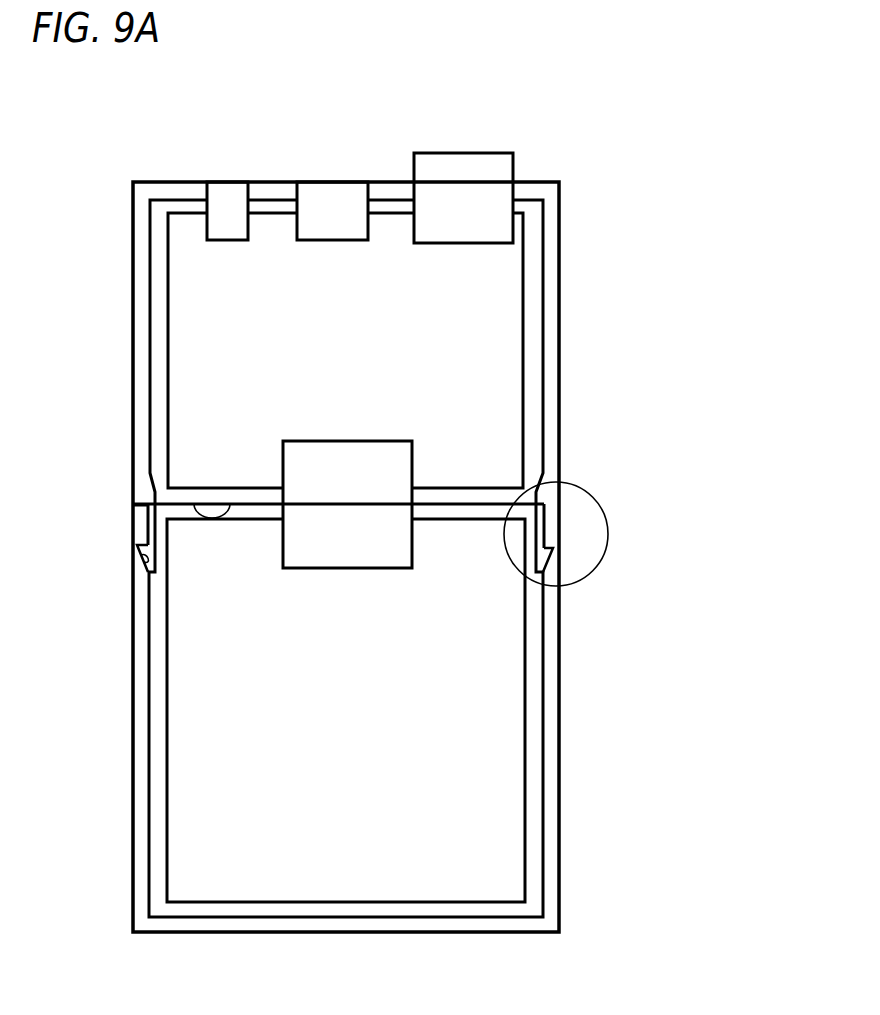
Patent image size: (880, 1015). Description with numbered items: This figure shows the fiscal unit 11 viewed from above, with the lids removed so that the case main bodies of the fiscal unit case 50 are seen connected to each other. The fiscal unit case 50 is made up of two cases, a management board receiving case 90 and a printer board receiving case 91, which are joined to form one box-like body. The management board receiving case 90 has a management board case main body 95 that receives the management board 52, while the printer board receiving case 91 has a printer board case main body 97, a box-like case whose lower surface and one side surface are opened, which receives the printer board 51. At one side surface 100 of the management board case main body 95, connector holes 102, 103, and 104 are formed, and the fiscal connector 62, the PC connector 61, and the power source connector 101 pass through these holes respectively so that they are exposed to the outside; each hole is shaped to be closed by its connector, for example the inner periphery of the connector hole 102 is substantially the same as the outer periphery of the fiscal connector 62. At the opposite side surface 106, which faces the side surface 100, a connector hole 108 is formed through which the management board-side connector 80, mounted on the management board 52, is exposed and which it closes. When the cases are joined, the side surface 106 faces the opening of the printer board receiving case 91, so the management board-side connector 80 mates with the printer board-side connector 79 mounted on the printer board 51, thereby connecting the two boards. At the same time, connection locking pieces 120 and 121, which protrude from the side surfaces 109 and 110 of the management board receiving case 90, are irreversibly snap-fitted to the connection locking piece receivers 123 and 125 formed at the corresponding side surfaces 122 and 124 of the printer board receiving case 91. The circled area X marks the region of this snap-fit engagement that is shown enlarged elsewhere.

The fiscal unit 11 is at (356, 107).
The fiscal unit case 50 is at (748, 483).
The printer board 51 is at (343, 840).
The management board 52 is at (503, 312).
The PC connector 61 is at (335, 182).
The fiscal connector 62 is at (462, 153).
The printer board-side connector 79 is at (348, 455).
The management board-side connector 80 is at (348, 568).
The management board receiving case 90 is at (559, 410).
The printer board receiving case 91 is at (559, 610).
The management board case main body 95 is at (559, 327).
The printer board case main body 97 is at (559, 745).
The side surface 100 is at (150, 182).
The power source connector 101 is at (228, 182).
The connector hole 102 is at (511, 192).
The connector hole 103 is at (369, 194).
The connector hole 104 is at (246, 196).
The side surface 106 is at (229, 500).
The connector hole 108 is at (412, 497).
The side surface 109 is at (559, 353).
The side surface 110 is at (133, 318).
The connection locking piece 120 is at (544, 526).
The connection locking piece 121 is at (152, 526).
The side surface 122 is at (559, 810).
The connection locking piece receiver 123 is at (548, 542).
The side surface 124 is at (133, 750).
The connection locking piece receiver 125 is at (147, 572).
The area X is at (589, 494).